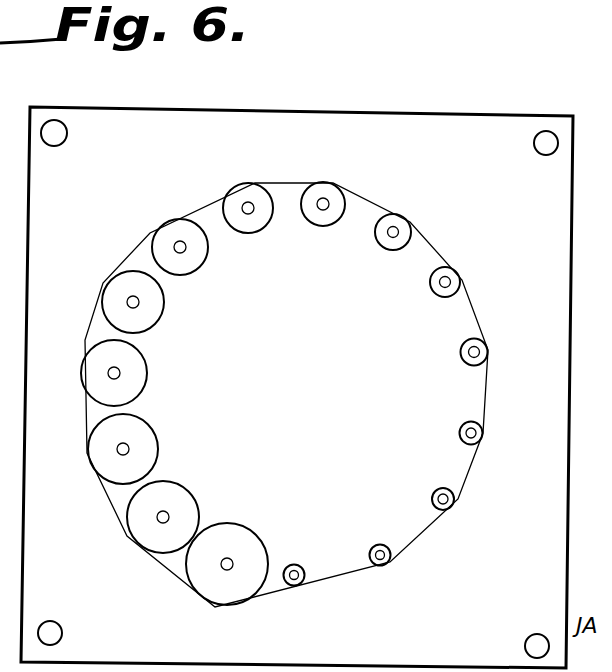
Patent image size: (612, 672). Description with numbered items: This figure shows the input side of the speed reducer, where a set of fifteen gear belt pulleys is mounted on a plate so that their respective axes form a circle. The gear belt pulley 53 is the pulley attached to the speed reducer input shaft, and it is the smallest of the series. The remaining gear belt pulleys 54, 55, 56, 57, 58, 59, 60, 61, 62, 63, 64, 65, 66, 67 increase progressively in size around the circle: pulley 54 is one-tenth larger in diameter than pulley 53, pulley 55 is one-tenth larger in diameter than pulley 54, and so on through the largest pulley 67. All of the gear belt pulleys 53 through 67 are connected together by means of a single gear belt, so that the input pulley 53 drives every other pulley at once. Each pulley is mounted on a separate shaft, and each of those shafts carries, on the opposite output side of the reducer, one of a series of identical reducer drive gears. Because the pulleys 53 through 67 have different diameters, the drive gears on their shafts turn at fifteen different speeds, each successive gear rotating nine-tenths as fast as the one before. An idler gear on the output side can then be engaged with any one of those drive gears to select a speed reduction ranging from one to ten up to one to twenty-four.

The gear belt pulley 53 is at (302, 563).
The gear belt pulley 54 is at (393, 546).
The gear belt pulley 55 is at (449, 491).
The gear belt pulley 56 is at (454, 434).
The gear belt pulley 57 is at (454, 361).
The gear belt pulley 58 is at (428, 302).
The gear belt pulley 59 is at (394, 262).
The gear belt pulley 60 is at (306, 238).
The gear belt pulley 61 is at (242, 247).
The gear belt pulley 62 is at (190, 288).
The gear belt pulley 63 is at (167, 338).
The gear belt pulley 64 is at (158, 395).
The gear belt pulley 65 is at (175, 447).
The gear belt pulley 66 is at (185, 498).
The gear belt pulley 67 is at (250, 513).